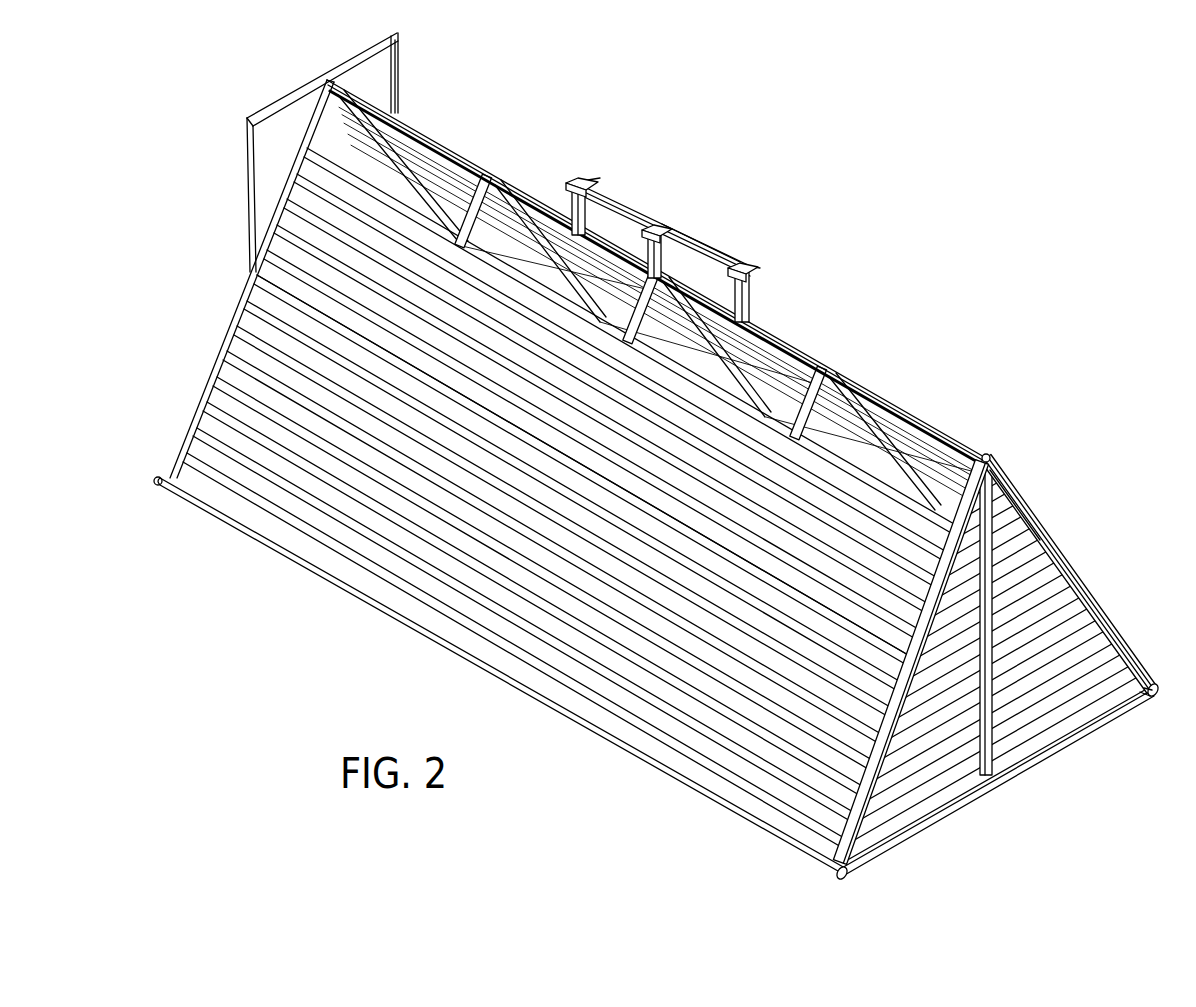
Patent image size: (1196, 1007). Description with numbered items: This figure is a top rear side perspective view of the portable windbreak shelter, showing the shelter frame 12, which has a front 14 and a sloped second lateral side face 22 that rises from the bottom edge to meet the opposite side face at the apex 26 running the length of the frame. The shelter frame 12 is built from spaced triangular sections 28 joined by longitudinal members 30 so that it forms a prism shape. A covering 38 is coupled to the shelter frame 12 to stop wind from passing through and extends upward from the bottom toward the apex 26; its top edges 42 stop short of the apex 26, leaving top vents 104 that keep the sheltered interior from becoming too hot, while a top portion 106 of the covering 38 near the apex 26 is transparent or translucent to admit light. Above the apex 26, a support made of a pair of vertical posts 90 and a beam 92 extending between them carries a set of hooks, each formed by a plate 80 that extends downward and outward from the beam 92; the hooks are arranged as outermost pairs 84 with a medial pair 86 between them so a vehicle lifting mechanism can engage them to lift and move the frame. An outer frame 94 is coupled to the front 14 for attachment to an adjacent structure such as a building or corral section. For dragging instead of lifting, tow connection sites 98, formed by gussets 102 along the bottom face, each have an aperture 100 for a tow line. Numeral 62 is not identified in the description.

The shelter frame 12 is at (672, 457).
The front 14 is at (554, 479).
The second lateral side face 22 is at (712, 757).
The apex 26 is at (874, 395).
The triangular sections 28 is at (1088, 598).
The longitudinal members 30 is at (582, 725).
The covering 38 is at (310, 455).
The top edges 42 is at (1000, 502).
The vertical post 62 is at (1000, 493).
The plate 80 is at (572, 186).
The outermost pairs 84 is at (610, 160).
The medial pair 86 is at (688, 215).
The vertical posts 90 is at (573, 228).
The beam 92 is at (700, 252).
The outer frame 94 is at (399, 73).
The tow connection sites 98 is at (1130, 715).
The aperture 100 is at (1157, 686).
The gussets 102 is at (1150, 698).
The top vents 104 is at (988, 480).
The top portion 106 is at (923, 457).